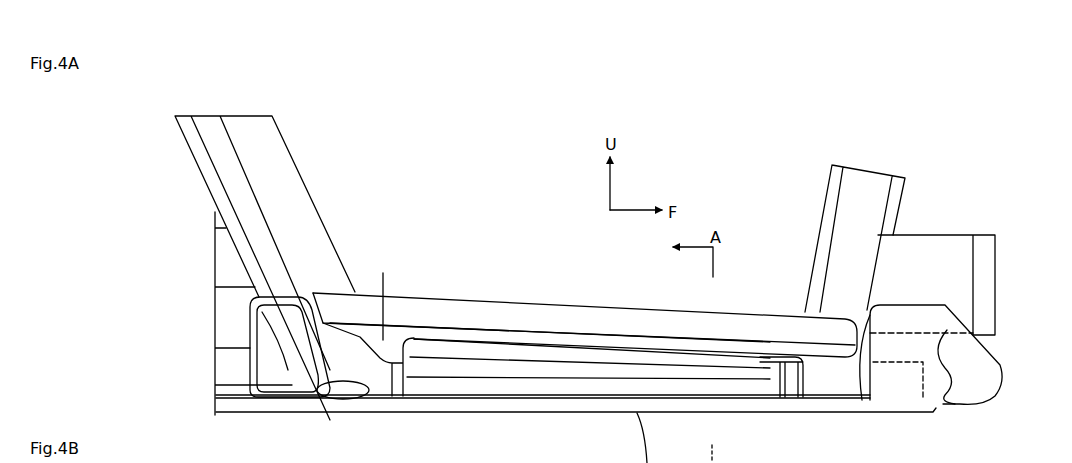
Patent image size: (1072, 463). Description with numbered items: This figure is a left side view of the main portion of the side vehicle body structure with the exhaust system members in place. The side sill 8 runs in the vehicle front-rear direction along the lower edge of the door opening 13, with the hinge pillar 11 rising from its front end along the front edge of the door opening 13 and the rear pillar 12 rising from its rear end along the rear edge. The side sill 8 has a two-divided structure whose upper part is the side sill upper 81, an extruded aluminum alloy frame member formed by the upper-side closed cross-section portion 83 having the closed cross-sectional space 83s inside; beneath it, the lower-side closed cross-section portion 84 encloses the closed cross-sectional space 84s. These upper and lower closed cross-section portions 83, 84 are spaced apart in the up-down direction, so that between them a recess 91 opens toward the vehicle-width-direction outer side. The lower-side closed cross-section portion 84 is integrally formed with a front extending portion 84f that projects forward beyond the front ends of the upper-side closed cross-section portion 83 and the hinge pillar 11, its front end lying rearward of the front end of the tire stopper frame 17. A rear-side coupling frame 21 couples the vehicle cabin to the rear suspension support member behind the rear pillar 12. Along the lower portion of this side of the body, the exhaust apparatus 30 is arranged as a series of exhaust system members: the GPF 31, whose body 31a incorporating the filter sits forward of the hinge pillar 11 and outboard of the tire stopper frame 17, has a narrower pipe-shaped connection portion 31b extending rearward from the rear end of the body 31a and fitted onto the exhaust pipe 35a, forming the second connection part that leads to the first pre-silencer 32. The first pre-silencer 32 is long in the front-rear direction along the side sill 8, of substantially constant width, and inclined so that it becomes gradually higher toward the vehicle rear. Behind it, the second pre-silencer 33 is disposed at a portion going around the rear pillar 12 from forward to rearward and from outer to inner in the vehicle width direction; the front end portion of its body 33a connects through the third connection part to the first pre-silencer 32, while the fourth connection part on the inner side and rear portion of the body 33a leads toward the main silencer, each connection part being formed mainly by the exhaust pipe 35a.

The side sill 8 is at (585, 304).
The hinge pillar 11 is at (902, 212).
The rear pillar 12 is at (320, 213).
The door opening 13 is at (585, 245).
The tire stopper frame 17 is at (952, 233).
The rear-side coupling frame 21 is at (233, 297).
The exhaust apparatus 30 is at (582, 403).
The GPF 31 is at (923, 310).
The body 31a is at (933, 400).
The connection portion 31b is at (815, 397).
The first pre-silencer 32 is at (643, 398).
The second pre-silencer 33 is at (282, 398).
The body 33a is at (272, 360).
The exhaust pipe 35a is at (232, 388).
The side sill upper 81 is at (610, 307).
The upper-side closed cross-section portion 83 is at (520, 303).
The closed cross-sectional space 83s is at (440, 300).
The lower-side closed cross-section portion 84 is at (605, 408).
The closed cross-sectional space 84s is at (495, 407).
The front extending portion 84f is at (893, 415).
The recess 91 is at (386, 350).